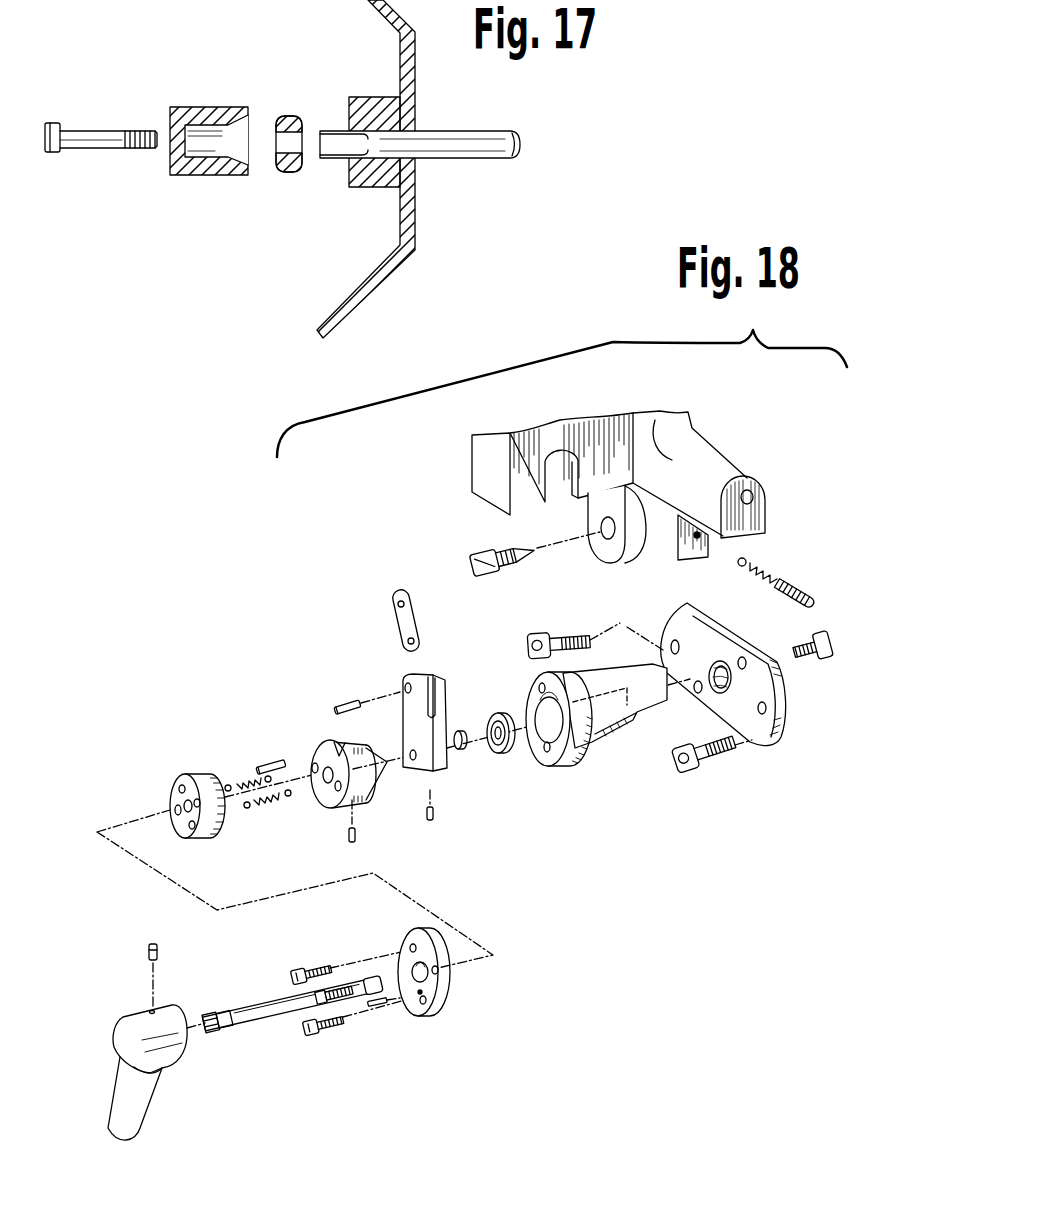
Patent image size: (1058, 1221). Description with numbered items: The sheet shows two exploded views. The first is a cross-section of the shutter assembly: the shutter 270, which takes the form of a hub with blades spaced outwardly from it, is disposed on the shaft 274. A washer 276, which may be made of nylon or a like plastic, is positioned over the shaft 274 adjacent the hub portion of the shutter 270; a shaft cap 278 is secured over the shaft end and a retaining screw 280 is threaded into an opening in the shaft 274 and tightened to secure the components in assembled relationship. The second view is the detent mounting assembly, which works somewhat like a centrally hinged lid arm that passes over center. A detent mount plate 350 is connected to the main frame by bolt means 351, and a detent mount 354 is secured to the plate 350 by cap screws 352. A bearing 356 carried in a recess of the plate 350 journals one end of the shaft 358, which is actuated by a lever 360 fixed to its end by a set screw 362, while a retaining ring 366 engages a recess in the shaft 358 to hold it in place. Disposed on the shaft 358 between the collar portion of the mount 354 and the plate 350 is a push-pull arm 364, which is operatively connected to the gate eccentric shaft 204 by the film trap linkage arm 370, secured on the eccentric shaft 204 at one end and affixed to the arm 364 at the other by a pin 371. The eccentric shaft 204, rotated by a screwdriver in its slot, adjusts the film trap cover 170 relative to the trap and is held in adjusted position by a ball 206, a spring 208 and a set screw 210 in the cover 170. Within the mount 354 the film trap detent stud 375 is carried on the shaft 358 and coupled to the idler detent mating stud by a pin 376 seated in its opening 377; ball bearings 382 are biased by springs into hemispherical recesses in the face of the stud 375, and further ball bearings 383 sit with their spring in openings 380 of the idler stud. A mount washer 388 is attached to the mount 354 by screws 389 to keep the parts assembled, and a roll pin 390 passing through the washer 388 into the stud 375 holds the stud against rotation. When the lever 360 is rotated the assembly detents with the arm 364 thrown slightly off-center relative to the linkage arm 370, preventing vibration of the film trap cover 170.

In FIG. 17, the shutter 270 is at (384, 12).
In FIG. 17, the shaft 274 is at (444, 142).
In FIG. 17, the washer 276 is at (290, 113).
In FIG. 17, the shaft cap 278 is at (196, 108).
In FIG. 17, the retaining screw 280 is at (80, 130).
In FIG. 18, the film trap cover 170 is at (693, 455).
In FIG. 18, the gate eccentric shaft 204 is at (497, 554).
In FIG. 18, the ball 206 is at (748, 561).
In FIG. 18, the spring 208 is at (778, 573).
In FIG. 18, the set screw 210 is at (812, 598).
In FIG. 18, the detent mount plate 350 is at (702, 612).
In FIG. 18, the bolt means 351 is at (540, 633).
In FIG. 18, the screw 352 is at (832, 638).
In FIG. 18, the detent mount 354 is at (560, 760).
In FIG. 18, the bearing 356 is at (493, 713).
In FIG. 18, the shaft 358 is at (257, 1004).
In FIG. 18, the lever 360 is at (138, 1113).
In FIG. 18, the set screw 362 is at (147, 947).
In FIG. 18, the push-pull arm 364 is at (447, 770).
In FIG. 18, the retaining ring 366 is at (462, 750).
In FIG. 18, the film trap linkage arm 370 is at (416, 615).
In FIG. 18, the pin 371 is at (347, 706).
In FIG. 18, the film trap detent stud 375 is at (190, 774).
In FIG. 18, the pin 376 is at (268, 760).
In FIG. 18, the opening 377 is at (171, 788).
In FIG. 18, the openings 380 is at (320, 772).
In FIG. 18, the ball bearings 382 is at (229, 793).
In FIG. 18, the ball bearings 383 is at (290, 796).
In FIG. 18, the mount washer 388 is at (446, 988).
In FIG. 18, the screws 389 is at (303, 970).
In FIG. 18, the roll pin 390 is at (375, 1010).